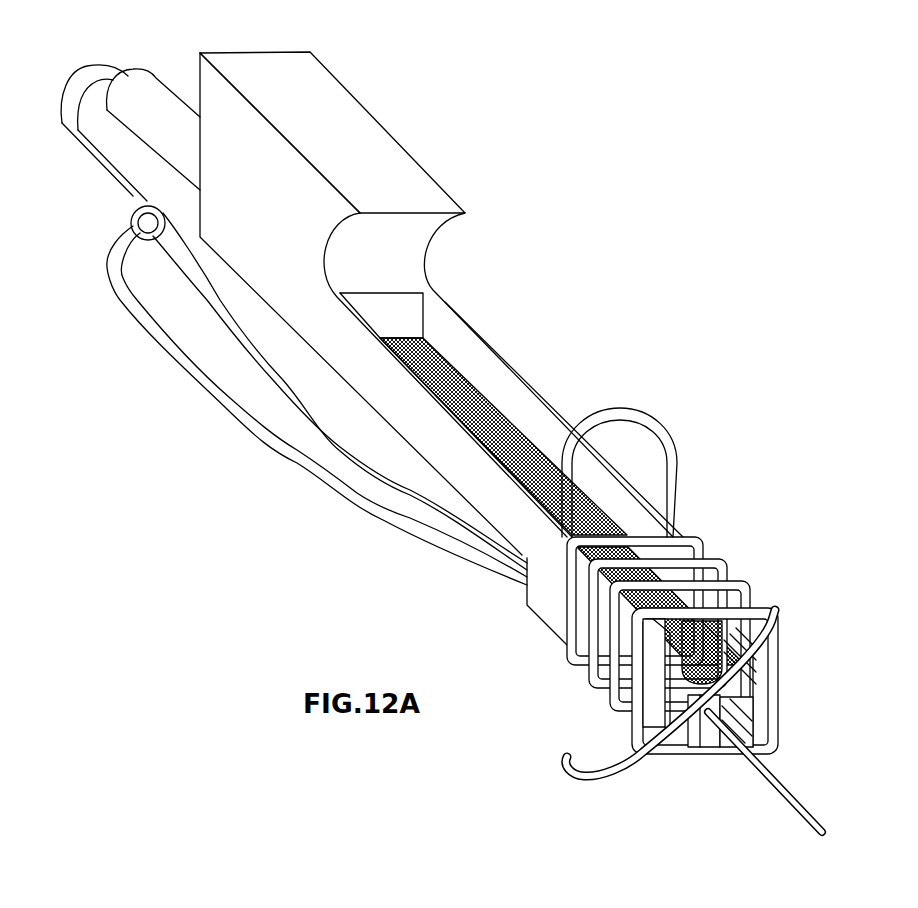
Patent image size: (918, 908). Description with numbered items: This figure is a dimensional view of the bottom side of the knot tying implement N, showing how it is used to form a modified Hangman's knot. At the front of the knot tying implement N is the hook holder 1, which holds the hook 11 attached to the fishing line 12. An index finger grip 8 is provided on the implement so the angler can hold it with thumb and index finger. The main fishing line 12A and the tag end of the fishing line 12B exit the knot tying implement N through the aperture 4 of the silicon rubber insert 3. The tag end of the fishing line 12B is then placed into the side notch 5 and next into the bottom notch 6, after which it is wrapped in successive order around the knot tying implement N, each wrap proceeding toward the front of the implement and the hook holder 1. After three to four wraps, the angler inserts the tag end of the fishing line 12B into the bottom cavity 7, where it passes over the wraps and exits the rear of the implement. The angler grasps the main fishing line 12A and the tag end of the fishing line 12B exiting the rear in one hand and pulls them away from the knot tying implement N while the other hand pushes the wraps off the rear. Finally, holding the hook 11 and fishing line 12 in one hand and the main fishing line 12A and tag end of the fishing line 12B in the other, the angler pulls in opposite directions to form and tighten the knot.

The hook holder 1 is at (145, 93).
The hook 11 is at (82, 82).
The knot tying implement N is at (365, 172).
The index finger grip 8 is at (405, 260).
The bottom cavity 7 is at (467, 390).
The fishing line 12 is at (217, 400).
The tag end of fishing line 12B is at (660, 433).
The main fishing line 12A is at (785, 793).
The bottom notch 6 is at (753, 602).
The side notch 5 is at (780, 664).
The silicon rubber insert 3 is at (695, 757).
The aperture 4 is at (717, 757).